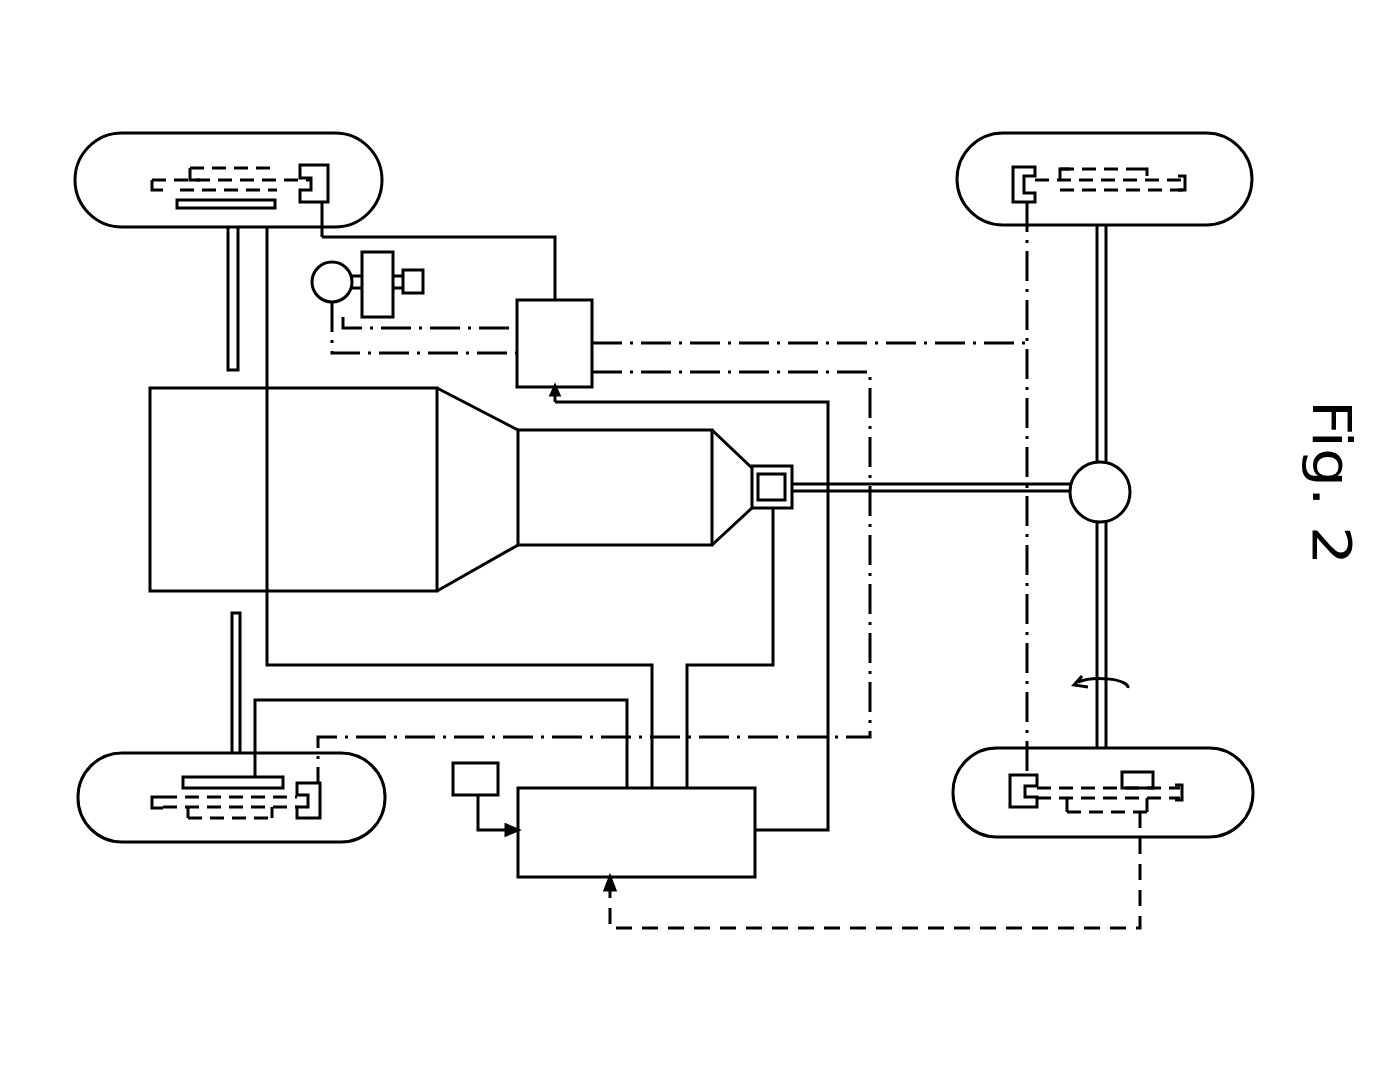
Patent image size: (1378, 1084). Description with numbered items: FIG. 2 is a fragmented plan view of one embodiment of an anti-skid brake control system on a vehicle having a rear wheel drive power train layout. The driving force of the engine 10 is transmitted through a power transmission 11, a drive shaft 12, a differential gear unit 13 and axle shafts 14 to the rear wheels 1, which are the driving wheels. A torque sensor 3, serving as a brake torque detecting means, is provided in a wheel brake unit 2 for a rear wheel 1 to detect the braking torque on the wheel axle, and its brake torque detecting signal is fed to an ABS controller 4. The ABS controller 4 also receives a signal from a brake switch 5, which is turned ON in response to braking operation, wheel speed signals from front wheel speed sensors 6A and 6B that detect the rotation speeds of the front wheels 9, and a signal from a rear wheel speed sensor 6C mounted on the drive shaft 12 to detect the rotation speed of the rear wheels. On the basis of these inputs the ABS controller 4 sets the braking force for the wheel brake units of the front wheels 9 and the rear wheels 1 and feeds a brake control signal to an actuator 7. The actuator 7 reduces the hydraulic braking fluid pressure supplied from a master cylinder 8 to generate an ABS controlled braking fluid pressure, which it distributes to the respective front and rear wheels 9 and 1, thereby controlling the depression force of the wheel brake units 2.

The rear wheel 1 is at (1210, 225).
The wheel brake unit 2 is at (1013, 180).
The torque sensor 3 is at (1137, 772).
The ABS controller 4 is at (757, 805).
The brake switch 5 is at (490, 772).
The front wheel speed sensor 6A is at (212, 210).
The front wheel speed sensor 6B is at (188, 777).
The rear wheel speed sensor 6C is at (767, 510).
The actuator 7 is at (584, 305).
The master cylinder 8 is at (313, 285).
The front wheel 9 is at (350, 135).
The engine 10 is at (350, 591).
The power transmission 11 is at (598, 545).
The drive shaft 12 is at (905, 483).
The differential gear unit 13 is at (1130, 492).
The axle shaft 14 is at (1108, 370).